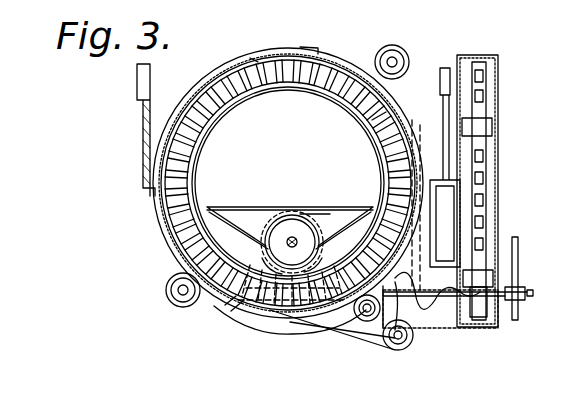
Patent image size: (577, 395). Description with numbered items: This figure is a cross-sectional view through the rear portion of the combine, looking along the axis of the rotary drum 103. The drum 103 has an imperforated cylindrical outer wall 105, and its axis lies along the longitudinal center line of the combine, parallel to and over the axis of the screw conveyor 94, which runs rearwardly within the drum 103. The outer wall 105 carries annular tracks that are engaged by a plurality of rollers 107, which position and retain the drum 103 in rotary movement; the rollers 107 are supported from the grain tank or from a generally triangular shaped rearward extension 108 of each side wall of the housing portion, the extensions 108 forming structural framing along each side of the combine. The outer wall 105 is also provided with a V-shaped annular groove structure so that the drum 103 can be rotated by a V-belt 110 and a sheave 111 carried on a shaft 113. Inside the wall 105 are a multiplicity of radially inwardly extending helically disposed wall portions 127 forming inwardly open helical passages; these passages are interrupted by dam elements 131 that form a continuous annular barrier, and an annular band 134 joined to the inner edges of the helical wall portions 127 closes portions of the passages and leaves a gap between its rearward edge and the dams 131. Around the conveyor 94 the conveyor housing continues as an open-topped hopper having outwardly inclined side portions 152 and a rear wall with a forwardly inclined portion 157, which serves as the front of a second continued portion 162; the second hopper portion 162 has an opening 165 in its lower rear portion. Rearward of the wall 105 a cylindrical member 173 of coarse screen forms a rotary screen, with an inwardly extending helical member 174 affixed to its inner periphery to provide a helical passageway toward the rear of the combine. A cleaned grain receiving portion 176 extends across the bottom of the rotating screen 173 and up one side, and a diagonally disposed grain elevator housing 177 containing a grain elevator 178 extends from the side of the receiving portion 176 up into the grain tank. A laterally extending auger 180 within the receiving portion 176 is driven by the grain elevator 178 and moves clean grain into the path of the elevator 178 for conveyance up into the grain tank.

The screw conveyor 94 is at (294, 226).
The drum 103 is at (354, 47).
The cylindrical outer wall 105 is at (212, 92).
The rollers 107 is at (403, 50).
The rearward extension 108 is at (143, 122).
The V-belt 110 is at (343, 338).
The sheave 111 is at (380, 342).
The shaft 113 is at (398, 350).
The helically disposed wall portions 127 is at (348, 87).
The dam elements 131 is at (207, 132).
The annular band 134 is at (373, 137).
The outwardly inclined side portions 152 is at (240, 227).
The forwardly inclined portion 157 is at (362, 174).
The second continued portion 162 is at (320, 240).
The opening 165 is at (260, 260).
The cylindrical member 173 is at (290, 313).
The helical member 174 is at (220, 298).
The cleaned grain receiving portion 176 is at (242, 320).
The grain elevator housing 177 is at (498, 165).
The grain elevator 178 is at (498, 199).
The auger 180 is at (470, 332).